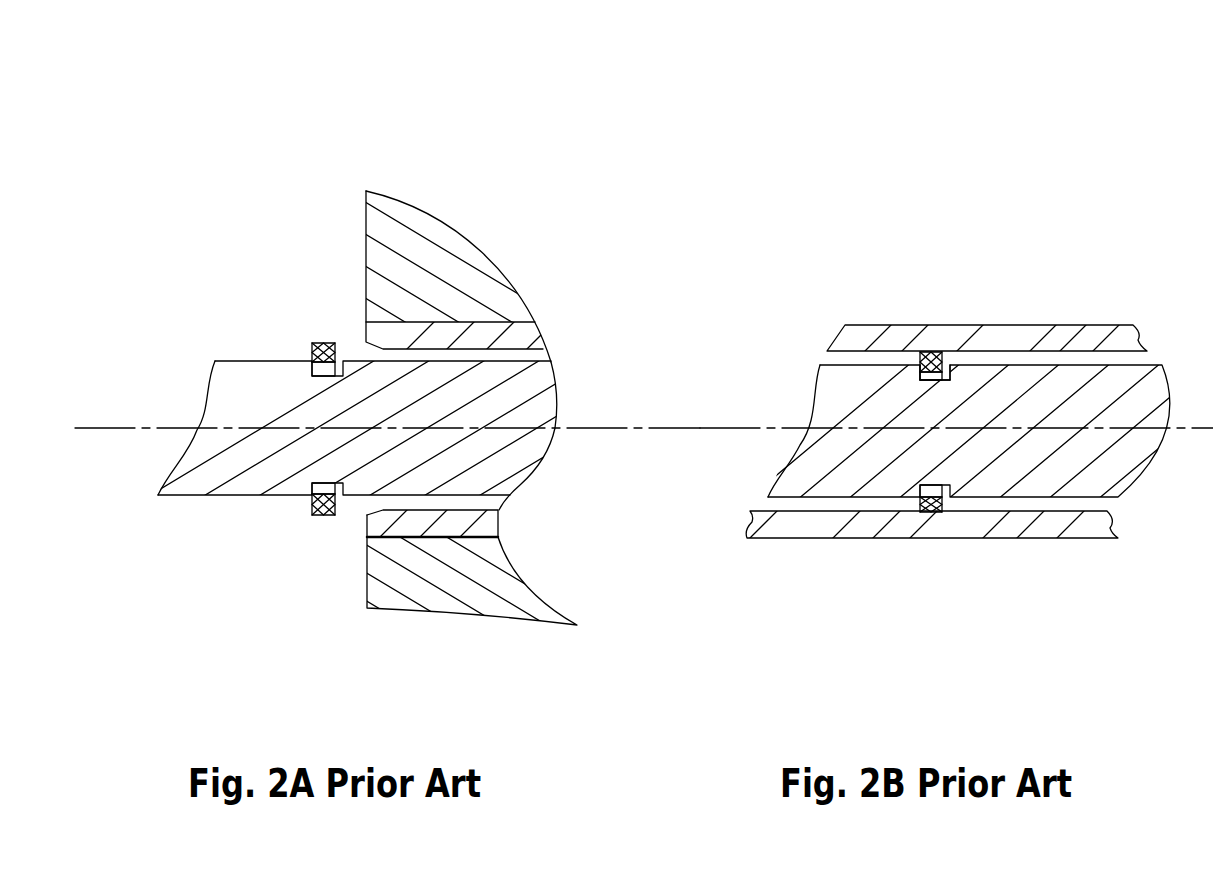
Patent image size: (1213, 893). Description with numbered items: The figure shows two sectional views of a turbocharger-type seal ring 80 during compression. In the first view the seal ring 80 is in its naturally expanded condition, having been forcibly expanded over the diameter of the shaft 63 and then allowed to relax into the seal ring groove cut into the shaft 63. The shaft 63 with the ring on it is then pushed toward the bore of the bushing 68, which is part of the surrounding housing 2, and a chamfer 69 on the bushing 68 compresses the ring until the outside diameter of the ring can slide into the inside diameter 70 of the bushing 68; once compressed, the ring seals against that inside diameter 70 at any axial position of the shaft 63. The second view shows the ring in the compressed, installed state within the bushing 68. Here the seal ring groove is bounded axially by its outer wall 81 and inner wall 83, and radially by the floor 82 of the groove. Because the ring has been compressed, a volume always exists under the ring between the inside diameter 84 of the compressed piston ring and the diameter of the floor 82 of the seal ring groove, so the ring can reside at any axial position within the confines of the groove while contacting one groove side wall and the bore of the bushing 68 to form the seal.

In FIG. 2A, the sealing device housing 2 is at (397, 242).
In FIG. 2A, the shaft 63 is at (223, 457).
In FIG. 2A, the bushing 68 is at (527, 337).
In FIG. 2B, the bushing 68 is at (902, 338).
In FIG. 2A, the chamfer 69 is at (380, 365).
In FIG. 2A, the inside diameter of the bushing 70 is at (480, 505).
In FIG. 2A, the seal ring 80 is at (322, 343).
In FIG. 2B, the outer wall of the seal ring groove 81 is at (900, 370).
In FIG. 2B, the floor of the seal ring groove 82 is at (943, 394).
In FIG. 2B, the inner wall of the seal ring groove 83 is at (971, 368).
In FIG. 2B, the inside diameter of the compressed piston ring 84 is at (937, 352).